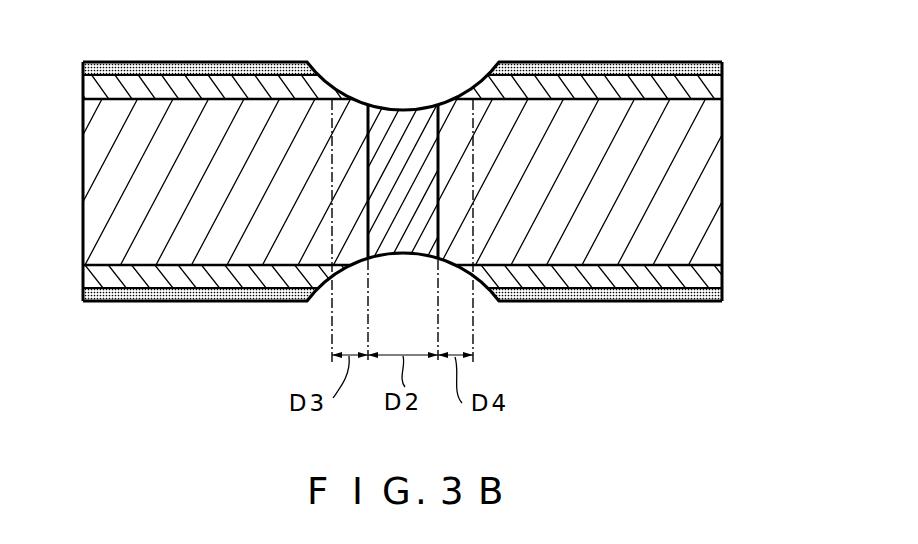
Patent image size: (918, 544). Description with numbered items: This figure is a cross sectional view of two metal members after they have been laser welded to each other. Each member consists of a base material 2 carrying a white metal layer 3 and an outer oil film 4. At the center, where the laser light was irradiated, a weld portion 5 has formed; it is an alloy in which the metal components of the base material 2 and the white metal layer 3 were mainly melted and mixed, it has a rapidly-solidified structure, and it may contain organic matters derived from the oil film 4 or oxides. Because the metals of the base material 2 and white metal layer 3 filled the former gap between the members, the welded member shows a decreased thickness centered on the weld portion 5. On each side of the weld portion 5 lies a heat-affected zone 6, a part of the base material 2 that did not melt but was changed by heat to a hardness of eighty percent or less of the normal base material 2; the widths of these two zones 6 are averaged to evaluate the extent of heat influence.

The base material 2 is at (687, 178).
The white metal layer 3 is at (712, 86).
The oil film 4 is at (685, 65).
The weld portion 5 is at (402, 143).
The heat-affected zone (HAZ) 6 is at (347, 128).